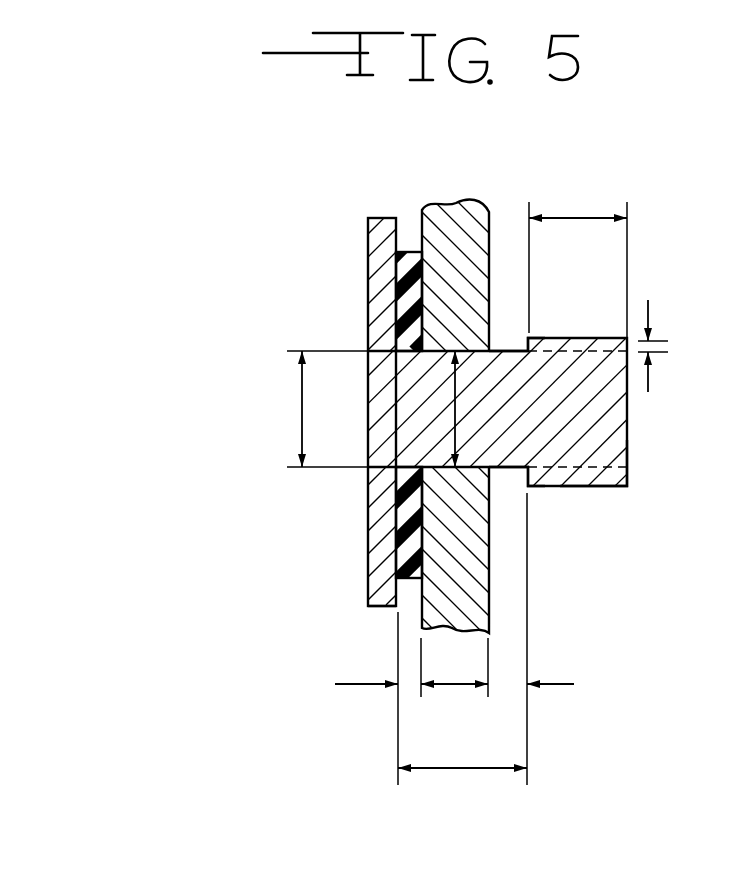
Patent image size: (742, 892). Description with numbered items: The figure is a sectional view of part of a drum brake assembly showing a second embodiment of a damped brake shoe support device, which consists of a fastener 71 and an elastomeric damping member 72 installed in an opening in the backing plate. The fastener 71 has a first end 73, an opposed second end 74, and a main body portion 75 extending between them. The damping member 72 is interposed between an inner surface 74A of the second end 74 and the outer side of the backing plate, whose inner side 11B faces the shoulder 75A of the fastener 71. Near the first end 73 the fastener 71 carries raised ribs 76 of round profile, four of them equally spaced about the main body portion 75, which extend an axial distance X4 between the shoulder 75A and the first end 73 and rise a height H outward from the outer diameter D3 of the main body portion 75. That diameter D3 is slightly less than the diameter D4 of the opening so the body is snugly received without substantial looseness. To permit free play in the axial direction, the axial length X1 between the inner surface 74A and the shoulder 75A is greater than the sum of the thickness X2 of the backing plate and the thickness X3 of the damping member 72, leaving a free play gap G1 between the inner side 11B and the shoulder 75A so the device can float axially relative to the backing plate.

The fastener 71 is at (387, 372).
The damping member 72 is at (409, 252).
The second end 74 is at (368, 293).
The inner surface 74A is at (378, 592).
The inner side 11B is at (492, 218).
The first end 73 is at (627, 405).
The main body portion 75 is at (510, 470).
The shoulder 75A is at (527, 344).
The raised ribs 76 is at (584, 487).
The outer diameter D3 is at (302, 387).
The diameter of the opening D4 is at (458, 408).
The axial length X1 is at (460, 771).
The thickness of the backing plate X2 is at (456, 686).
The thickness of the damping material X3 is at (412, 681).
The axial distance X4 is at (579, 217).
The free play gap G1 is at (508, 683).
The height H is at (663, 347).